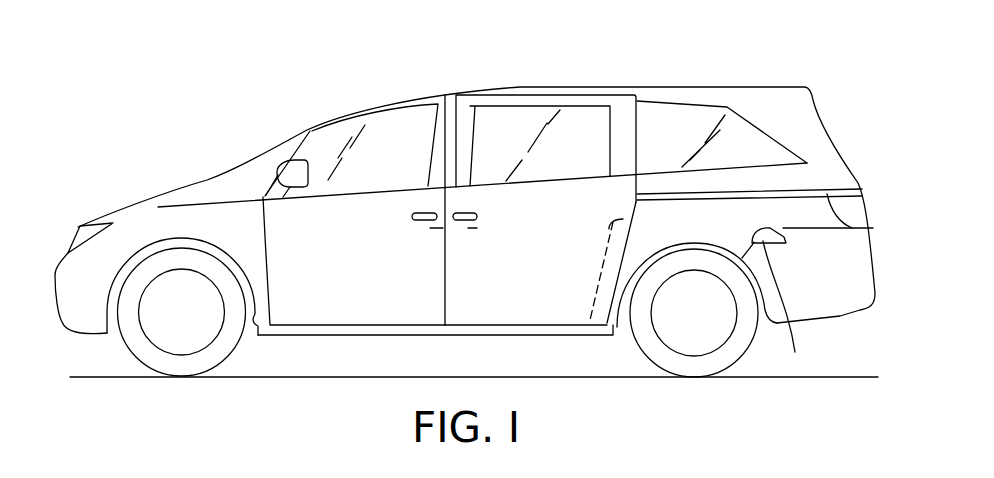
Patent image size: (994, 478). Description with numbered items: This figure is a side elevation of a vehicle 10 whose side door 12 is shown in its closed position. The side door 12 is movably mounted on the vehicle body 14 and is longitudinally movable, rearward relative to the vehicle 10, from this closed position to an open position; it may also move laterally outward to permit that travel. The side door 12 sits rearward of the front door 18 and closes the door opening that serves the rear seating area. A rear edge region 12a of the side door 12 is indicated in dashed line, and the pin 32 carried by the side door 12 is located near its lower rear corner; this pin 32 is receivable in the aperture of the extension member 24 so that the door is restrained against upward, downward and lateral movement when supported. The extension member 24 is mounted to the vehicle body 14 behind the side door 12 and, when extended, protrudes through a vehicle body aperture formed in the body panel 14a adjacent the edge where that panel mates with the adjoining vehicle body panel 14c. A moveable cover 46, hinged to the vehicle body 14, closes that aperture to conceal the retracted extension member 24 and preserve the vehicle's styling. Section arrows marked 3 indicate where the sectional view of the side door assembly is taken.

The vehicle 10 is at (322, 105).
The side door 12 is at (540, 293).
The rear edge of sliding door 12a is at (640, 222).
The vehicle body 14 is at (742, 170).
The body panel 14a is at (818, 302).
The vehicle body panel 14c is at (792, 210).
The front door 18 is at (350, 305).
The extension member 24 is at (787, 237).
The pin 32 is at (593, 322).
The moveable cover 46 is at (785, 308).
The section line 3- 3 is at (443, 228).